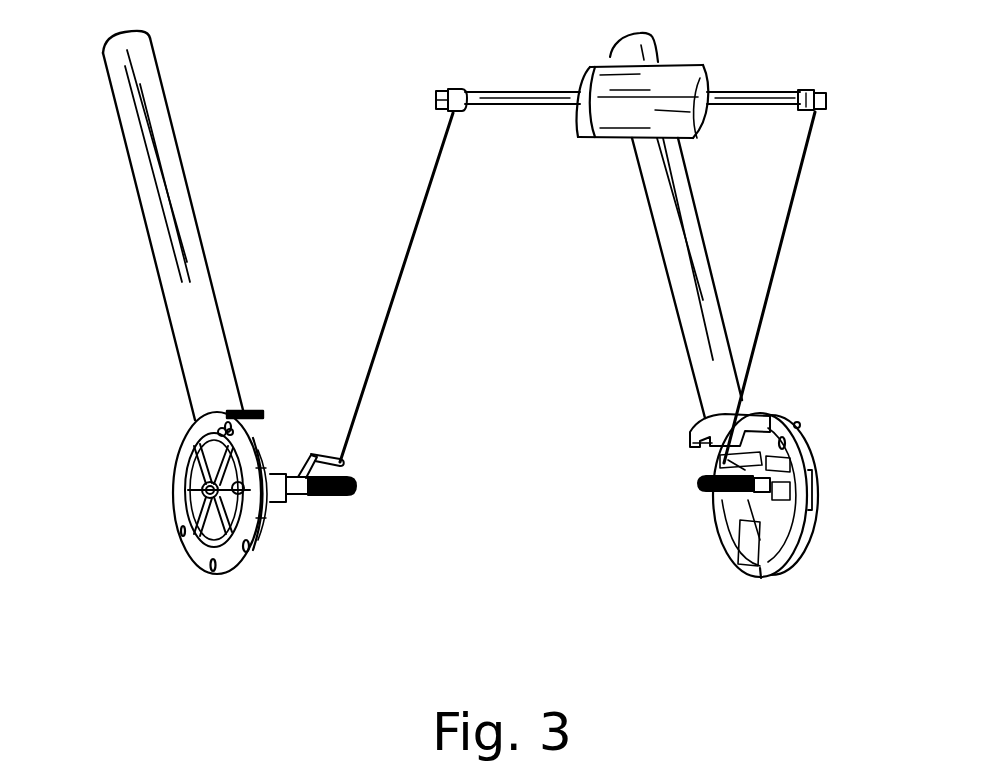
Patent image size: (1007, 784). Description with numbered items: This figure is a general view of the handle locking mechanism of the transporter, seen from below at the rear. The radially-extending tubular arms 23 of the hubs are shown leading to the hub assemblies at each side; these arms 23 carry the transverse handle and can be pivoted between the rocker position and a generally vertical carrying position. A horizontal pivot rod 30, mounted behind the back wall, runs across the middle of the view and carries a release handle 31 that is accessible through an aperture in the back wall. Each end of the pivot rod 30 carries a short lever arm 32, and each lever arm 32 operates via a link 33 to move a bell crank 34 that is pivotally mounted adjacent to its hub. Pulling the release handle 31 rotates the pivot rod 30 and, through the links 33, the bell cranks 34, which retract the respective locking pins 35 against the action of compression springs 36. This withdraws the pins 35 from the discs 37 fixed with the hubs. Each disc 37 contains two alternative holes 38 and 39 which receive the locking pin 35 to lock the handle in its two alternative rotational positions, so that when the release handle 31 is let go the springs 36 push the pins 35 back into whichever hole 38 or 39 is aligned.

The tubular arm 23 is at (163, 143).
The pivot rod 30 is at (519, 92).
The release handle 31 is at (693, 128).
The lever arm 32 is at (440, 108).
The link 33 is at (397, 302).
The bell crank 34 is at (313, 452).
The locking pin 35 is at (293, 494).
The compression spring 36 is at (338, 497).
The disc 37 is at (183, 450).
The hole 38 is at (217, 430).
The hole 39 is at (188, 500).